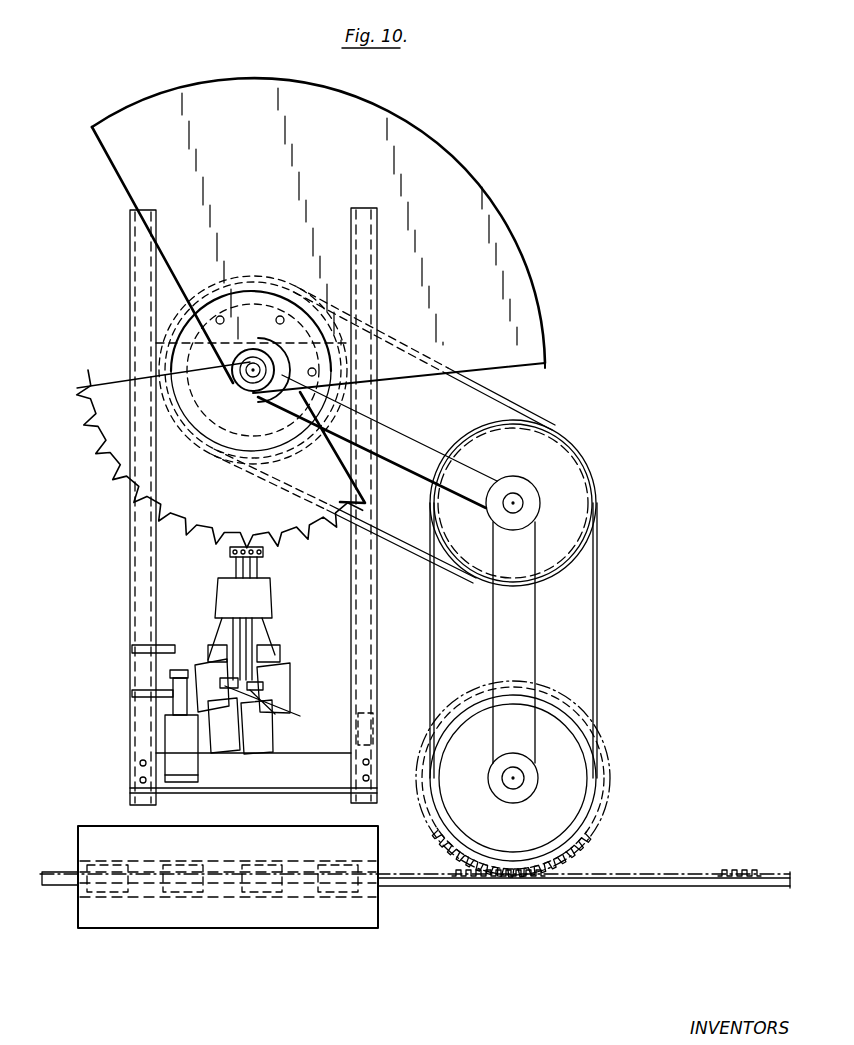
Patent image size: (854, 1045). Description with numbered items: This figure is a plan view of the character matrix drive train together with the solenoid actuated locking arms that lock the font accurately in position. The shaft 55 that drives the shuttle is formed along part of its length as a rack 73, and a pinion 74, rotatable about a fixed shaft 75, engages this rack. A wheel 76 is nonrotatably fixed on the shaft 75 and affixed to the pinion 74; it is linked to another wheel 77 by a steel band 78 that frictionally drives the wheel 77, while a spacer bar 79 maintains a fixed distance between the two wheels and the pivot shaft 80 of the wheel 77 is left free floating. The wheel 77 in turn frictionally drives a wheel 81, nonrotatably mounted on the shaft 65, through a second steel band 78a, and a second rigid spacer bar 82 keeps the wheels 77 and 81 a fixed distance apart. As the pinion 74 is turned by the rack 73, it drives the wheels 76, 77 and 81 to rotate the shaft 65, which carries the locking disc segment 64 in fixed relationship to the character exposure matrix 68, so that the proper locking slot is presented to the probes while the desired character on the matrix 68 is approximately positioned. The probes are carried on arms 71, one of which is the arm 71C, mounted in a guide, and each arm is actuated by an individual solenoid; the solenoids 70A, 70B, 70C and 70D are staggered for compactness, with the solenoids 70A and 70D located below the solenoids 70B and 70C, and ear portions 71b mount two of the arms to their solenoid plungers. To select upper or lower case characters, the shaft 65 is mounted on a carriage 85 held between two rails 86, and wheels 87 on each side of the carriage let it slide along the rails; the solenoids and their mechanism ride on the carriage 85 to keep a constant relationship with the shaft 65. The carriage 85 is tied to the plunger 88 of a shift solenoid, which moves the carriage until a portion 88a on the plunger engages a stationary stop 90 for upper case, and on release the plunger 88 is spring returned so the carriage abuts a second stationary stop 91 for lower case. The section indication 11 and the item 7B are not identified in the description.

The section line 11 is at (383, 83).
The character exposure matrix 68 is at (280, 209).
The friction wheel 81 is at (187, 327).
The shaft 65 is at (240, 363).
The wheels 87 is at (142, 392).
The locking disc segment 64 is at (216, 489).
The second rigid spacer bar 82 is at (418, 461).
The second steel band 78a is at (490, 394).
The wheel 77 is at (575, 529).
The pivot shaft 80 is at (530, 497).
The rails 86 is at (143, 590).
The spacer bar 79 is at (527, 642).
The steel band 78 is at (600, 625).
The carriage 85 is at (198, 584).
The second stationary stop 91 is at (135, 647).
The portion of plunger 88a is at (170, 677).
The stationary stop 90 is at (142, 695).
The plunger 88 is at (180, 705).
The arms 71 is at (265, 590).
The ear portions 71b is at (217, 642).
The solenoid 70A is at (204, 675).
The solenoid 70D is at (277, 676).
The solenoid 70B is at (236, 730).
The solenoid 70C is at (271, 730).
The arm 71C is at (263, 700).
The wheel 76 is at (528, 844).
The fixed shaft 75 is at (524, 778).
The pinion 74 is at (563, 857).
The rack 73 is at (544, 880).
The shaft 55 is at (786, 896).
The housing 7B is at (153, 917).